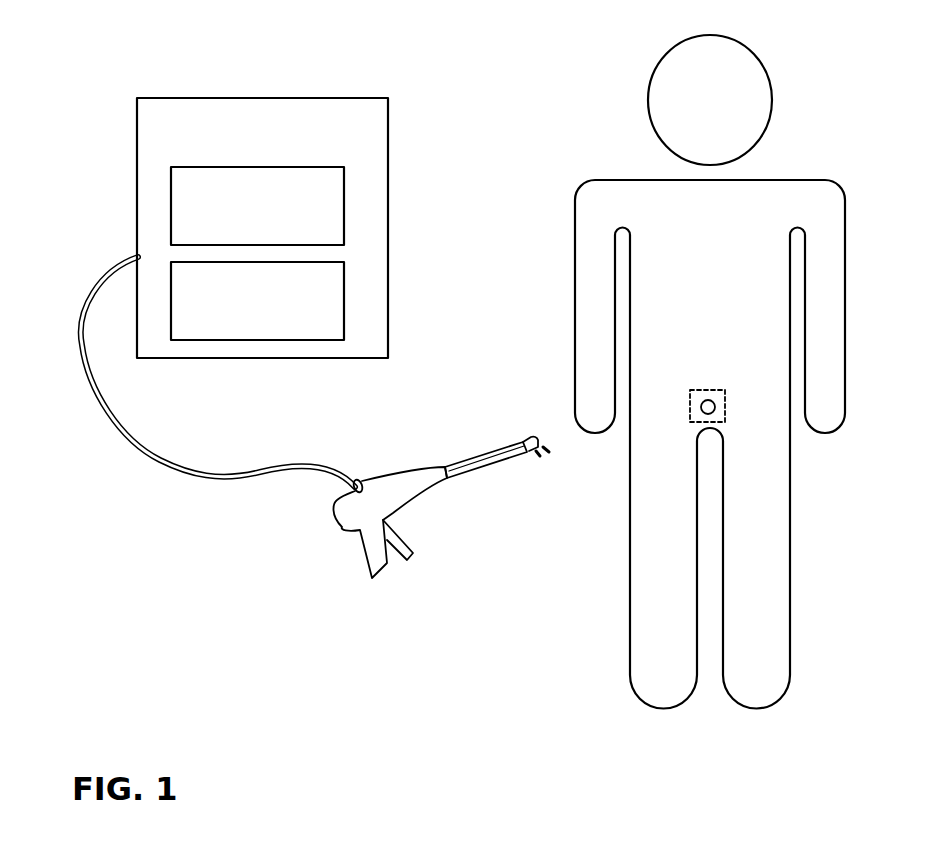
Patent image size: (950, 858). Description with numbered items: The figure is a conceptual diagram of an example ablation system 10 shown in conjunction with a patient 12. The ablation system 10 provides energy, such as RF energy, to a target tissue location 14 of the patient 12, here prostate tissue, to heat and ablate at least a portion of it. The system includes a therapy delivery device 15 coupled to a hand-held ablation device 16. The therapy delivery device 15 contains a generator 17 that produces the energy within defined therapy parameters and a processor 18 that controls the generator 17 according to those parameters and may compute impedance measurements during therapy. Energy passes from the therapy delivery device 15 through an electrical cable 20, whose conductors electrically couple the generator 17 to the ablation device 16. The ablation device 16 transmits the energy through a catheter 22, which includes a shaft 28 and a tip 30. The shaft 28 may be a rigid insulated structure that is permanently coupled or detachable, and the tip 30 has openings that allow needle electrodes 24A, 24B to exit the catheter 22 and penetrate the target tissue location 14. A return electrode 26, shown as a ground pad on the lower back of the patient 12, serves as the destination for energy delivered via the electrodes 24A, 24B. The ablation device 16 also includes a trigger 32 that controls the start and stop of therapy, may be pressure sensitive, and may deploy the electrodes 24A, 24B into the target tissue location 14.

The ablation system 10 is at (449, 165).
The patient 12 is at (814, 180).
The target tissue location 14 is at (715, 410).
The therapy delivery device 15 is at (258, 98).
The ablation device 16 is at (347, 513).
The generator 17 is at (257, 301).
The processor 18 is at (257, 206).
The electrical cable 20 is at (97, 405).
The catheter 22 is at (484, 440).
The electrode 24A is at (549, 450).
The electrode 24B is at (528, 456).
The return electrode 26 is at (697, 390).
The shaft 28 is at (463, 467).
The tip 30 is at (531, 437).
The trigger 32 is at (408, 565).